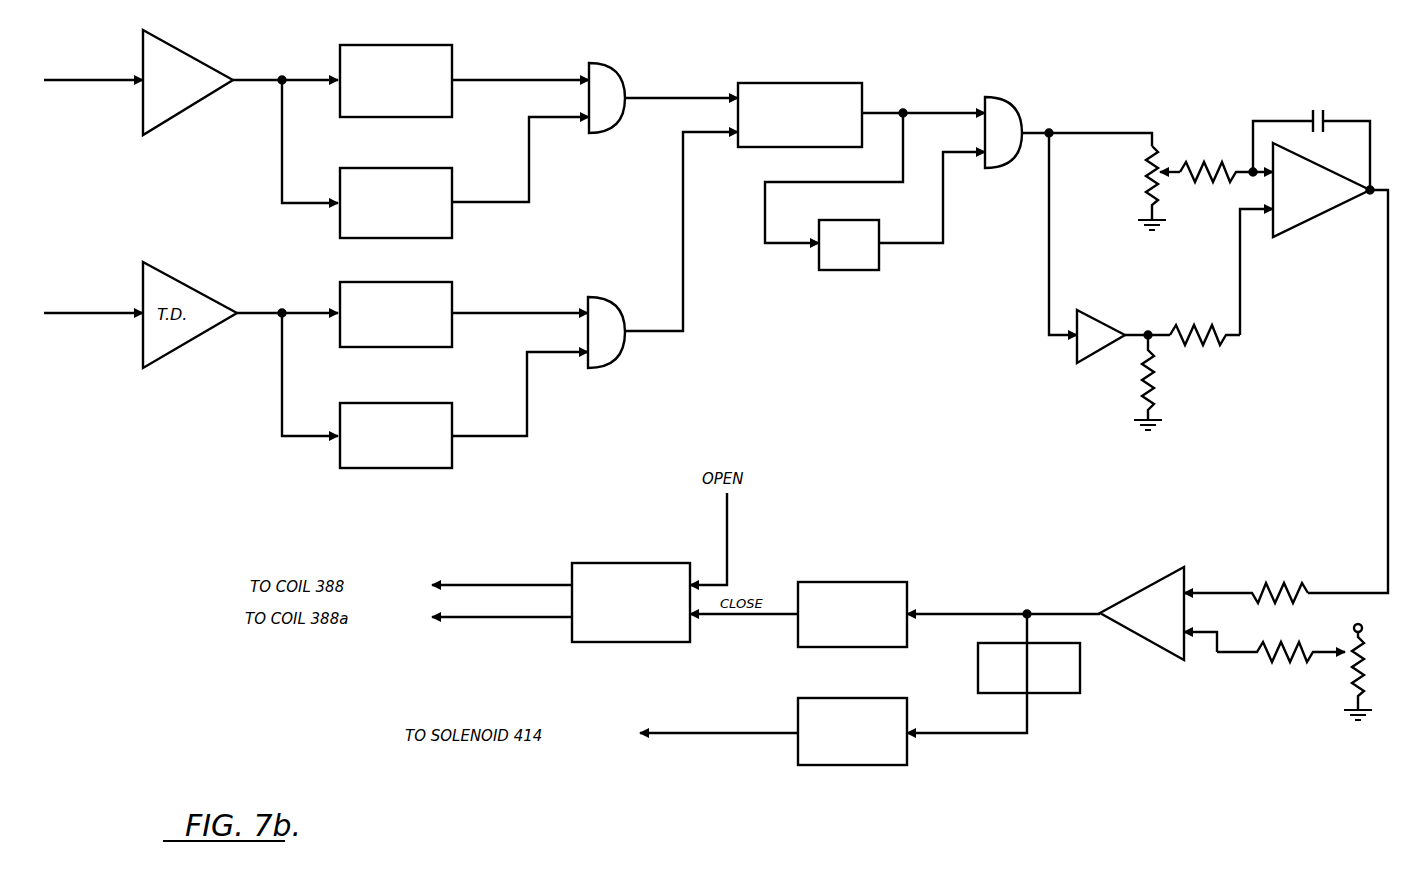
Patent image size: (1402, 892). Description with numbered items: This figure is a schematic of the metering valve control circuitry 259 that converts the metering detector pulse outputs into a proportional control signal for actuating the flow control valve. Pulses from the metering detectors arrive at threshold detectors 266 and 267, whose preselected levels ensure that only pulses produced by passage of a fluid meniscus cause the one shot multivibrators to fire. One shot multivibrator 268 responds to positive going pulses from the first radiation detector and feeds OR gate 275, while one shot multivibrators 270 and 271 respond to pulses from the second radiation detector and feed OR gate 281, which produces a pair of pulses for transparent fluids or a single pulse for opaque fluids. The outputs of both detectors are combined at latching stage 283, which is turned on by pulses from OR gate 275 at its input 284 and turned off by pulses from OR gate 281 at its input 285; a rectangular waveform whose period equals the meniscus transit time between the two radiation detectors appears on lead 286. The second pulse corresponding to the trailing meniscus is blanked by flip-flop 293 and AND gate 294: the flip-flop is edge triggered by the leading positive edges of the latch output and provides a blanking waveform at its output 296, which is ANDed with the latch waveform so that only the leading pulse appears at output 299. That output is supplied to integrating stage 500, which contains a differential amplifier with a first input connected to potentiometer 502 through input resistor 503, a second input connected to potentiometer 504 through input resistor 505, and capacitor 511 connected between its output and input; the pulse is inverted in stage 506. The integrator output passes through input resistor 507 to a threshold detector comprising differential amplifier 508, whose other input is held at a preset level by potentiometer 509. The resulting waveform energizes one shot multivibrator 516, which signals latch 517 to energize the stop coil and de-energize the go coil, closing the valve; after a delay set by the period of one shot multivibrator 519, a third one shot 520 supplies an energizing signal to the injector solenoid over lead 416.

The control circuit 259 is at (255, 532).
The threshold detector 266 is at (190, 57).
The threshold detector 267 is at (410, 168).
The one shot multivibrator 268 is at (415, 47).
The one shot multivibrator 270 is at (415, 282).
The one shot multivibrator 271 is at (403, 403).
The OR gate 275 is at (613, 78).
The OR gate 281 is at (612, 362).
The latching stage 283 is at (800, 83).
The latch input 284 is at (678, 104).
The latch input 285 is at (700, 137).
The lead 286 is at (888, 110).
The flip-flop 293 is at (868, 270).
The AND gate 294 is at (1005, 110).
The flip-flop output 296 is at (943, 206).
The AND gate output 299 is at (1096, 133).
The integrating stage 500 is at (1243, 106).
The potentiometer 502 is at (1150, 178).
The input resistor 503 is at (1225, 166).
The potentiometer 504 is at (1130, 362).
The input resistor 505 is at (1200, 325).
The inverting stage 506 is at (1112, 298).
The input resistor 507 is at (1285, 590).
The differential amplifier 508 is at (1145, 590).
The potentiometer 509 is at (1352, 677).
The capacitor 511 is at (1323, 112).
The one shot multivibrator 516 is at (858, 582).
The latch 517 is at (628, 563).
The one shot multivibrator 519 is at (1065, 693).
The one shot 520 is at (855, 765).
The lead 416 is at (730, 734).